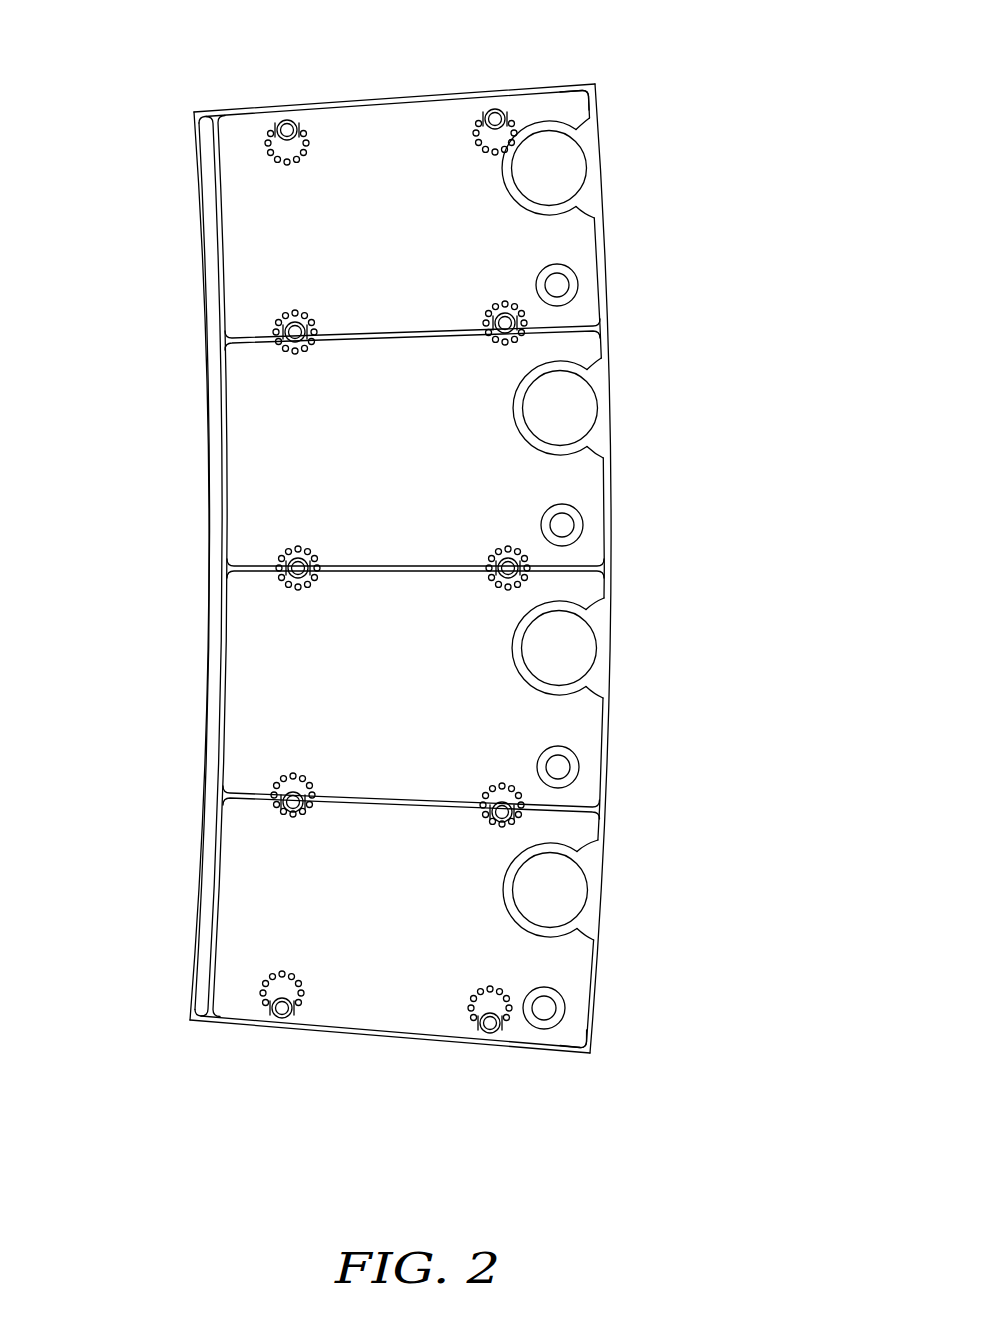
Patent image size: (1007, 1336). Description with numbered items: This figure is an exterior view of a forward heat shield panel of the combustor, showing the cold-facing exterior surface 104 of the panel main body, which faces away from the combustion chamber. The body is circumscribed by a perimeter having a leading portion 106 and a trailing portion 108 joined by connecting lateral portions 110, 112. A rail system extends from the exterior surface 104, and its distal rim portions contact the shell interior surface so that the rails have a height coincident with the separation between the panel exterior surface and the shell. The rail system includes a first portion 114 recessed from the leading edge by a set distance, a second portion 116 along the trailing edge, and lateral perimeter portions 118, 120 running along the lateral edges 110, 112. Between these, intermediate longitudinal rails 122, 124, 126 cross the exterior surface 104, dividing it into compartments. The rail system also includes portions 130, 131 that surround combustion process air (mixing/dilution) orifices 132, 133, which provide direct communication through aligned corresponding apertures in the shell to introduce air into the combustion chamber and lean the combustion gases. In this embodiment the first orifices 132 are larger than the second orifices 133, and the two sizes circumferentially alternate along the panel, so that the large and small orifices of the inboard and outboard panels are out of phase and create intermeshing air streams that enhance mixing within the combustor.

The exterior surface 104 is at (575, 722).
The leading portion 106 is at (200, 600).
The trailing portion 108 is at (620, 598).
The lateral portion 110 is at (407, 90).
The lateral portion 112 is at (367, 1046).
The first portion of rail system 114 is at (217, 880).
The second portion of rail system 116 is at (600, 830).
The lateral perimeter portion 118 is at (523, 88).
The lateral perimeter portion 120 is at (520, 1049).
The intermediate longitudinal rail 122 is at (403, 333).
The intermediate longitudinal rail 124 is at (386, 564).
The intermediate longitudinal rail 126 is at (392, 795).
The rail system portion surrounding first orifice 130 is at (570, 365).
The rail system portion surrounding second orifice 131 is at (566, 512).
The first orifice 132 is at (580, 406).
The second orifice 133 is at (570, 530).